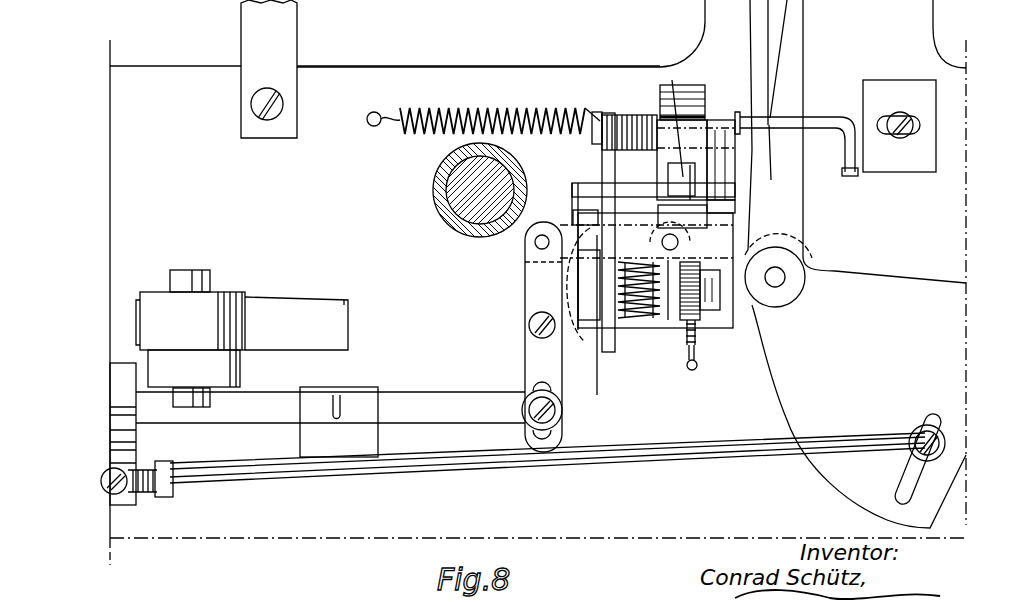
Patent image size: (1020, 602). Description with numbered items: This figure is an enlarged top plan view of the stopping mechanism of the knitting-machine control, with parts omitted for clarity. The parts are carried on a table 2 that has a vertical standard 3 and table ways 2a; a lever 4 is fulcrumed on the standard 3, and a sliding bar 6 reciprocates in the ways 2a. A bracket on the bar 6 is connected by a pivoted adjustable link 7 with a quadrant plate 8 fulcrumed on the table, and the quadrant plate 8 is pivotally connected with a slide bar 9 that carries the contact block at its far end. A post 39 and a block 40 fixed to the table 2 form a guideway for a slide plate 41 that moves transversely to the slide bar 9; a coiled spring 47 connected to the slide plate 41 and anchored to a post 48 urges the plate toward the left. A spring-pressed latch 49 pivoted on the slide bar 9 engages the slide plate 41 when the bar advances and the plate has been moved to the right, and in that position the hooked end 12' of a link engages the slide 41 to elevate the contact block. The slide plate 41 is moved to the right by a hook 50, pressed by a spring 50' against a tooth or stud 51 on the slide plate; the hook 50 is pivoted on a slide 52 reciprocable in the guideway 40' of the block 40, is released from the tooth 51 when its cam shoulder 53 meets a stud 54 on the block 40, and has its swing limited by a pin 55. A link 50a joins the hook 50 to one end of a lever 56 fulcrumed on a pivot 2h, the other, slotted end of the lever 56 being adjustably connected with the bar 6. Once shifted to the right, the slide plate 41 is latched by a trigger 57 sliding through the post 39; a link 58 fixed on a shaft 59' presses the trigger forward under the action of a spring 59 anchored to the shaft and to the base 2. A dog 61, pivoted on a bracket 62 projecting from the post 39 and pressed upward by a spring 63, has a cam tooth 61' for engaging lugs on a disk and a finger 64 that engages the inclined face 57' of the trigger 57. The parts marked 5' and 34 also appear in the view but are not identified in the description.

The table 2 is at (352, 76).
The table ways 2a is at (377, 385).
The pivot 2h is at (527, 328).
The vertical standard 3 is at (305, 310).
The lever 4 is at (240, 367).
The bracket 5' is at (123, 417).
The sliding bar 6 is at (330, 398).
The pivoted adjustable link 7 is at (740, 452).
The quadrant plate 8 is at (848, 473).
The slide bar 9 is at (803, 12).
The hooked end 12' is at (855, 264).
The shaft 34 is at (462, 184).
The post 39 is at (716, 160).
The block 40 is at (639, 193).
The guideway 40' is at (618, 316).
The slide plate 41 is at (580, 181).
The coiled spring 47 is at (525, 108).
The post 48 is at (376, 113).
The spring pressed latch 49 is at (750, 140).
The hook 50 is at (560, 337).
The spring 50' is at (708, 316).
The link 50a is at (565, 256).
The tooth 51 is at (568, 410).
The slide 52 is at (575, 217).
The cam shoulder 53 is at (690, 225).
The stud 54 is at (745, 199).
The pin 55 is at (652, 205).
The lever 56 is at (530, 263).
The trigger 57 is at (677, 140).
The inclined face 57' is at (715, 182).
The link 58 is at (690, 95).
The spring 59 is at (621, 114).
The shaft 59' is at (567, 135).
The dog 61 is at (696, 335).
The cam tooth 61' is at (655, 331).
The bracket 62 is at (645, 328).
The spring 63 is at (622, 236).
The finger 64 is at (690, 145).